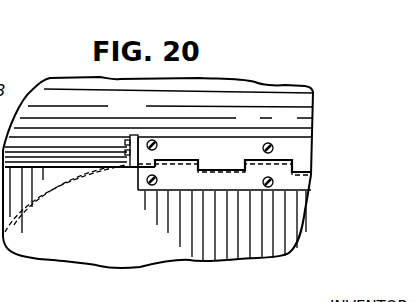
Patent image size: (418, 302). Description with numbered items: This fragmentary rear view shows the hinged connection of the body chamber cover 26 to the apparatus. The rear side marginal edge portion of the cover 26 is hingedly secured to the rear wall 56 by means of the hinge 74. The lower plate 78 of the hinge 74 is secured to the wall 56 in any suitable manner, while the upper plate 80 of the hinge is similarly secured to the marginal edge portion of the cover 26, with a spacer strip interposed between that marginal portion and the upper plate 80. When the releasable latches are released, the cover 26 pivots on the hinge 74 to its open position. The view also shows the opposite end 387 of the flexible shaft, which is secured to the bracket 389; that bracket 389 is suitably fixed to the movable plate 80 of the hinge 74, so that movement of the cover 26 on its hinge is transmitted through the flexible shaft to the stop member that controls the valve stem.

The cover 26 is at (262, 88).
The wall 56 is at (75, 257).
The hinge 74 is at (275, 141).
The lower plate 78 is at (222, 190).
The upper plate 80 is at (242, 141).
The opposite end 387 is at (127, 163).
The bracket 389 is at (135, 136).